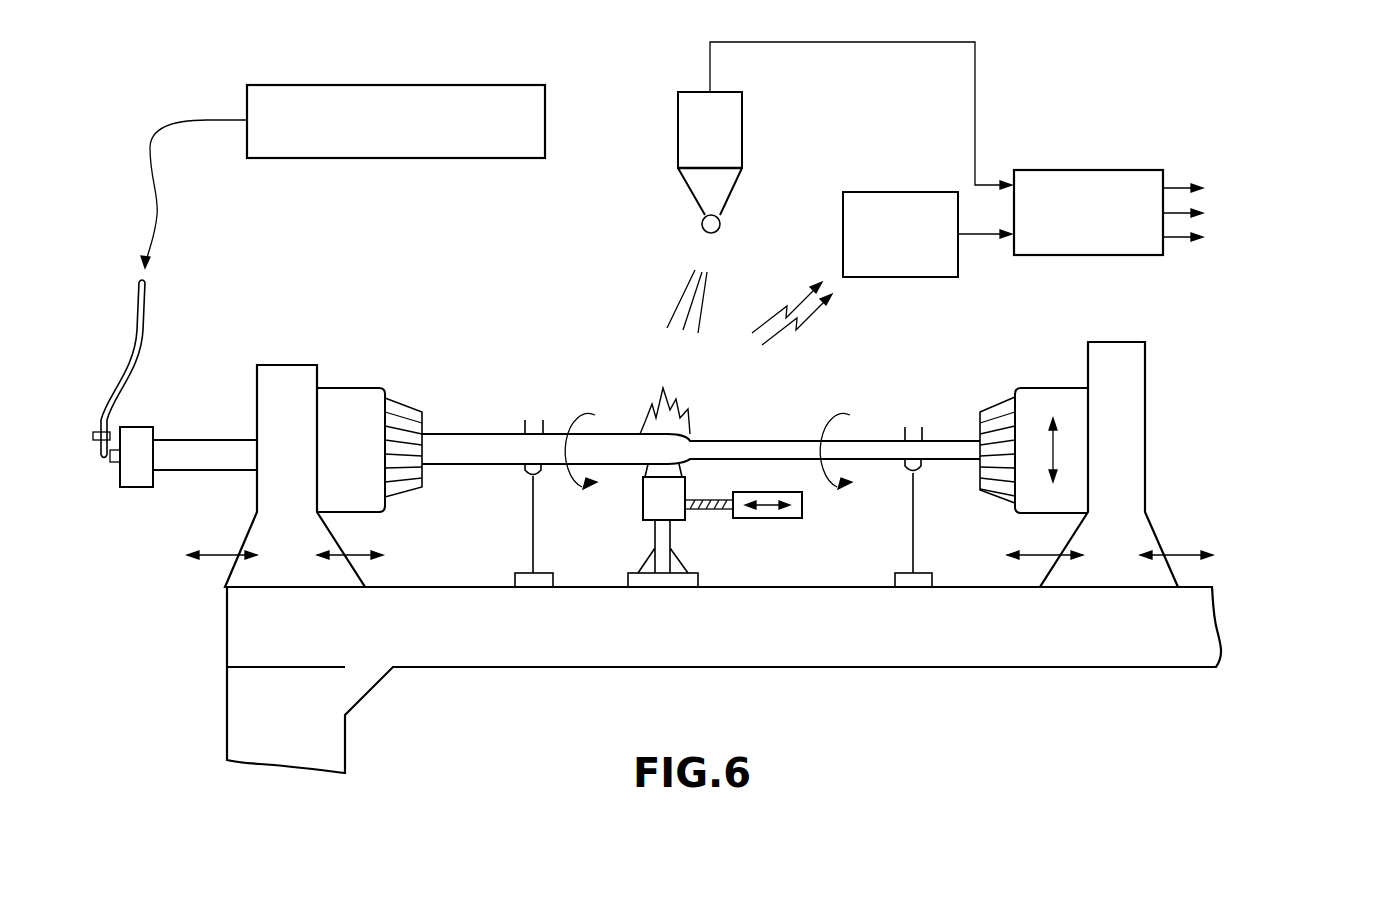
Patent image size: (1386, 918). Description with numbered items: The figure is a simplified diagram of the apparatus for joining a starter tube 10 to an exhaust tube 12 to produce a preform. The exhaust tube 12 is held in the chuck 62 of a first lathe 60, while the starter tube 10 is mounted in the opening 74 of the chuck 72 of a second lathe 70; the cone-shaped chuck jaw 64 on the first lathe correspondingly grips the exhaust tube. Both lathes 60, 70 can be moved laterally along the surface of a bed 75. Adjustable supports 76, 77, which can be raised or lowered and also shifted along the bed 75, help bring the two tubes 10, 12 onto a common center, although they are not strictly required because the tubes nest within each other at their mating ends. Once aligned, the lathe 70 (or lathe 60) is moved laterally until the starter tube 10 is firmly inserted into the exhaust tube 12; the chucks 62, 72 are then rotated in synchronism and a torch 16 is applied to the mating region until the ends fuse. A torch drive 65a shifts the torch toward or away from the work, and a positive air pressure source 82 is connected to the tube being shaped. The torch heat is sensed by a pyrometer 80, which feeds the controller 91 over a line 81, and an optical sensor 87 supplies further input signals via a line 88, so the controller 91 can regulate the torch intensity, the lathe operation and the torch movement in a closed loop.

The starter tube 10 is at (746, 448).
The exhaust tube 12 is at (465, 466).
The torch 16 is at (643, 508).
The lathe 60 is at (168, 513).
The chuck 62 is at (353, 388).
The chuck cone 64 is at (424, 431).
The torch actuator 65a is at (780, 520).
The lathe 70 is at (1247, 538).
The chuck 72 is at (1037, 396).
The opening 74 is at (978, 429).
The bed 75 is at (875, 668).
The adjustable support 76 is at (913, 543).
The adjustable support 77 is at (533, 540).
The pyrometer 80 is at (742, 110).
The line 81 is at (802, 42).
The positive air pressure source 82 is at (363, 85).
The optical sensor 87 is at (872, 192).
The line 88 is at (975, 237).
The controller 91 is at (1125, 170).